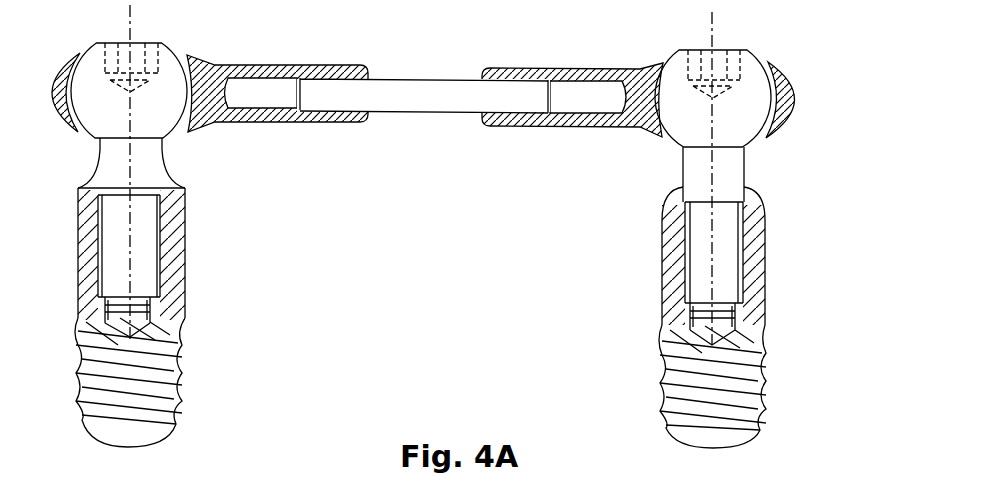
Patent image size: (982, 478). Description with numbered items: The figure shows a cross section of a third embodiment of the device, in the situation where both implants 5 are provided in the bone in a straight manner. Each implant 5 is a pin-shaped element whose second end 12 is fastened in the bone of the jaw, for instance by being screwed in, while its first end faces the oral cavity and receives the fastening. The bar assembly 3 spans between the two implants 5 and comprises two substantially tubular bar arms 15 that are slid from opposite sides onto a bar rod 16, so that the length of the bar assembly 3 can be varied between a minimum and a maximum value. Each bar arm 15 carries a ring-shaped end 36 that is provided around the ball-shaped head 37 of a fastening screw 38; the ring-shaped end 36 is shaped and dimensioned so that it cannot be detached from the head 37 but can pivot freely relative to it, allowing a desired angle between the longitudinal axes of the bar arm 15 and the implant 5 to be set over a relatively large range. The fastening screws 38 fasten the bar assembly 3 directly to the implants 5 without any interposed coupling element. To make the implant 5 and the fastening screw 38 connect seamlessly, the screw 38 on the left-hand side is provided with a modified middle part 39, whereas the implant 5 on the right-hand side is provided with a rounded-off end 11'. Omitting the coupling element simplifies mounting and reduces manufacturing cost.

The bar assembly 3 is at (425, 115).
The implant 5 is at (752, 286).
The rounded-off end 11' is at (751, 253).
The second end 12 is at (742, 410).
The bar arm 15 is at (557, 80).
The bar rod 16 is at (437, 93).
The ring-shaped end 36 is at (790, 84).
The ball-shaped head 37 is at (752, 67).
The fastening screw 38 is at (735, 164).
The modified middle part 39 is at (107, 158).